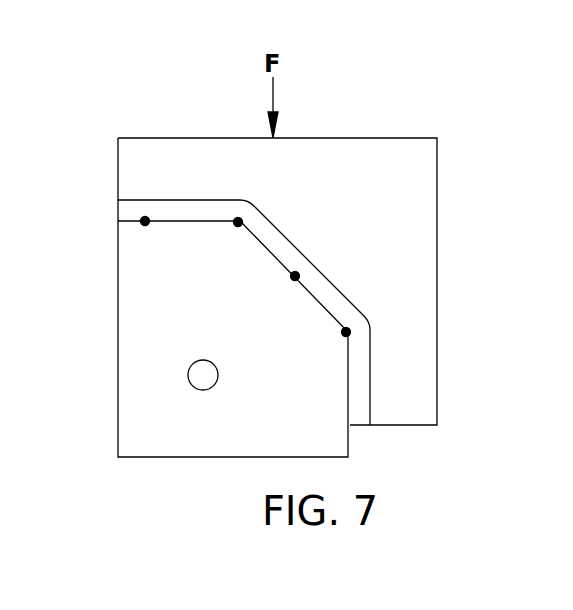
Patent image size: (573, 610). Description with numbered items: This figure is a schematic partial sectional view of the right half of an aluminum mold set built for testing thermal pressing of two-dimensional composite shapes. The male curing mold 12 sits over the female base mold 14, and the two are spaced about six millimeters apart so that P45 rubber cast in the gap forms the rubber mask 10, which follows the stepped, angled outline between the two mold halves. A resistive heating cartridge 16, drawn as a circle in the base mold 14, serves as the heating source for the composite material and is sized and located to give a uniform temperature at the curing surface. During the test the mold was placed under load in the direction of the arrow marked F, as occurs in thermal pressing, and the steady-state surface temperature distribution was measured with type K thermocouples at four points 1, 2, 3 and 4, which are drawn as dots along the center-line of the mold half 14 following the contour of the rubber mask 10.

The rubber mask 10 is at (337, 290).
The male curing mold 12 is at (413, 349).
The female base mold 14 is at (133, 335).
The resistive heating cartridge 16 is at (156, 418).
The temperature measurement point 1 is at (145, 252).
The temperature measurement point 2 is at (221, 253).
The temperature measurement point 3 is at (278, 305).
The temperature measurement point 4 is at (326, 354).